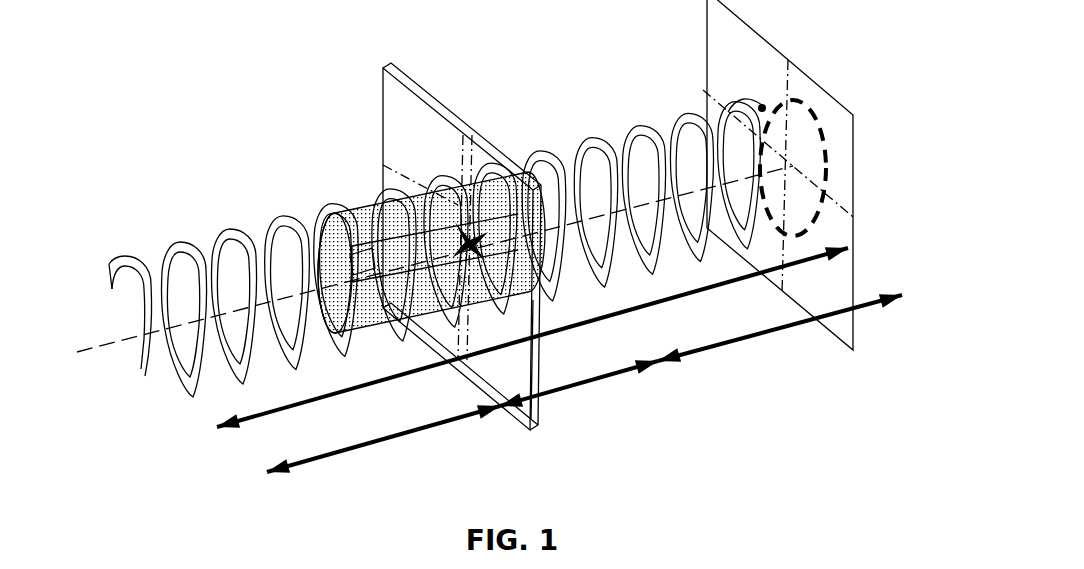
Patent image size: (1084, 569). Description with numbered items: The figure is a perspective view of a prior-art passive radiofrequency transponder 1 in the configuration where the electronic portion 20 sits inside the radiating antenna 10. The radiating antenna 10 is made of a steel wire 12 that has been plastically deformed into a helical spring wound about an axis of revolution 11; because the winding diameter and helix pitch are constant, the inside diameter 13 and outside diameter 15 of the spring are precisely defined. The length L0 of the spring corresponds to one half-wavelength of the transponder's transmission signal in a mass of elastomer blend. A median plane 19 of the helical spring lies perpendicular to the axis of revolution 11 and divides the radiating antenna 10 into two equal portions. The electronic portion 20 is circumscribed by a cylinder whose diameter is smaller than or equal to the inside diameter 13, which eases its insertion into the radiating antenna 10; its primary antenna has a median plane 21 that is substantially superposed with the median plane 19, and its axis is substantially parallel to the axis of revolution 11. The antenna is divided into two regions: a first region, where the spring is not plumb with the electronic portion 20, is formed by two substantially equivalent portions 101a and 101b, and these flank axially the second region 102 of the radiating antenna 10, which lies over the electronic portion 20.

The passive radiofrequency transponder 1 is at (355, 132).
The radiating antenna 10 is at (622, 126).
The axis of revolution 11 is at (97, 350).
The steel wire 12 is at (133, 260).
The inside diameter 13 is at (792, 233).
The outside diameter 15 is at (787, 97).
The median plane of the helical spring 19 is at (541, 372).
The electronic portion 20 is at (392, 221).
The median plane of the primary antenna 21 is at (408, 68).
The first portion of the first region 101a is at (383, 445).
The second portion of the first region 101b is at (780, 335).
The second region of the radiating antenna 102 is at (579, 392).
The length of the spring L0 is at (617, 314).